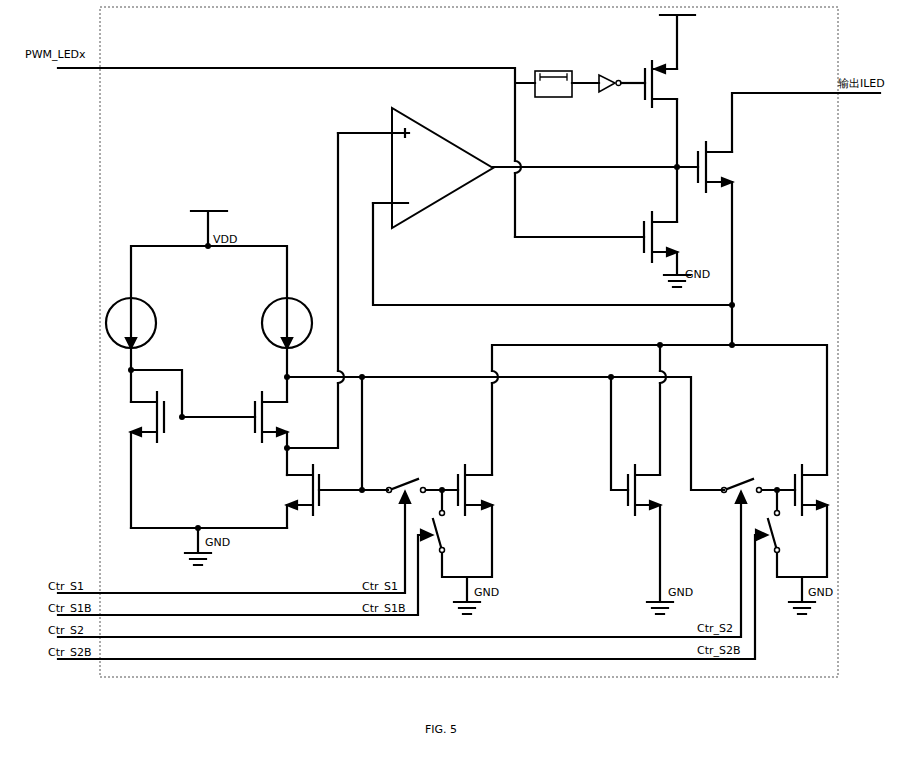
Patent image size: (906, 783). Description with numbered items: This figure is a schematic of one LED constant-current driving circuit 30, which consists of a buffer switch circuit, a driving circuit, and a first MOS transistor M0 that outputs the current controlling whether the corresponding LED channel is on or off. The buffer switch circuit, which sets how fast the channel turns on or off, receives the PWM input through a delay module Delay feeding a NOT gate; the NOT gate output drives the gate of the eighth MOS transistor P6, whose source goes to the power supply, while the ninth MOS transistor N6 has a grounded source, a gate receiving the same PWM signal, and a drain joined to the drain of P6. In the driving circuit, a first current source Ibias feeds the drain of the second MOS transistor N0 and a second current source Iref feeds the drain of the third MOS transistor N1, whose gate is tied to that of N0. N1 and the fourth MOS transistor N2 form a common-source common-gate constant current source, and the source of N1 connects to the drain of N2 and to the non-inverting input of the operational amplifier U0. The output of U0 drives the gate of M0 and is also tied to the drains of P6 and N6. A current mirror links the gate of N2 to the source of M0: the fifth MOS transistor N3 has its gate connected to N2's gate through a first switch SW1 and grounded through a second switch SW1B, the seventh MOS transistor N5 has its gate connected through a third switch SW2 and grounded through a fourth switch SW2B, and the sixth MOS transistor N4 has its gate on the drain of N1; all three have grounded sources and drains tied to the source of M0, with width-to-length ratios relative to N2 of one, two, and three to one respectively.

The LED constant-current driving circuit 30 is at (469, 342).
The second MOS transistor N0 is at (142, 417).
The third MOS transistor N1 is at (276, 417).
The fourth MOS transistor N2 is at (313, 486).
The fifth MOS transistor N3 is at (475, 477).
The sixth MOS transistor N4 is at (643, 478).
The seventh MOS transistor N5 is at (811, 478).
The ninth MOS transistor N6 is at (667, 237).
The eighth MOS transistor P6 is at (666, 84).
The first MOS transistor M0 is at (721, 167).
The operational amplifier U0 is at (442, 175).
The first switch SW1 is at (406, 478).
The second switch SW1B is at (455, 532).
The third switch SW2 is at (742, 478).
The fourth switch SW2B is at (790, 532).
The first current source Ibias is at (147, 323).
The second current source Iref is at (298, 323).
The delay module Delay is at (553, 91).